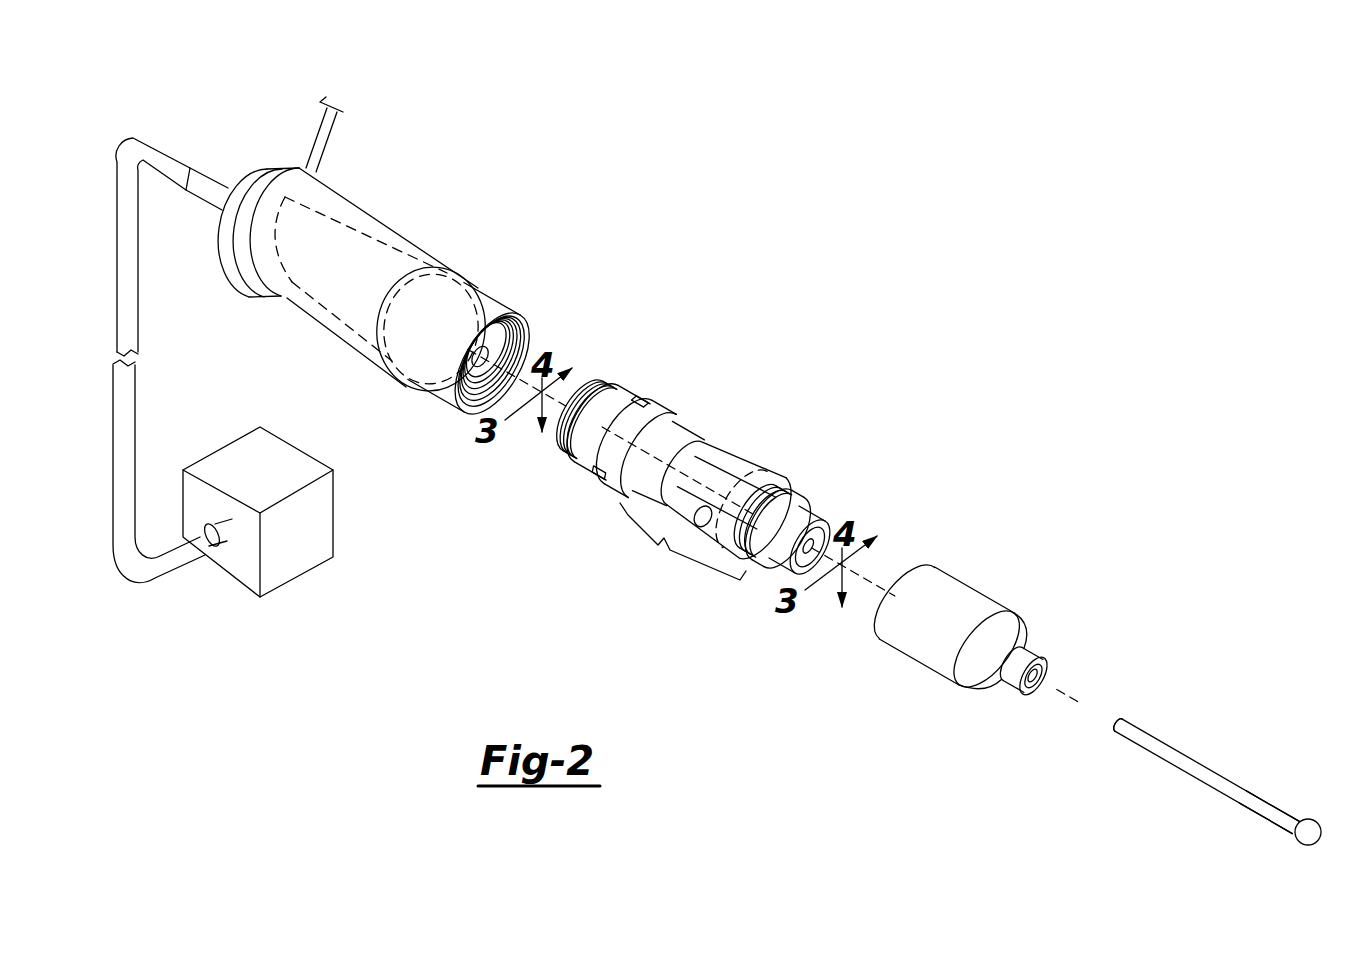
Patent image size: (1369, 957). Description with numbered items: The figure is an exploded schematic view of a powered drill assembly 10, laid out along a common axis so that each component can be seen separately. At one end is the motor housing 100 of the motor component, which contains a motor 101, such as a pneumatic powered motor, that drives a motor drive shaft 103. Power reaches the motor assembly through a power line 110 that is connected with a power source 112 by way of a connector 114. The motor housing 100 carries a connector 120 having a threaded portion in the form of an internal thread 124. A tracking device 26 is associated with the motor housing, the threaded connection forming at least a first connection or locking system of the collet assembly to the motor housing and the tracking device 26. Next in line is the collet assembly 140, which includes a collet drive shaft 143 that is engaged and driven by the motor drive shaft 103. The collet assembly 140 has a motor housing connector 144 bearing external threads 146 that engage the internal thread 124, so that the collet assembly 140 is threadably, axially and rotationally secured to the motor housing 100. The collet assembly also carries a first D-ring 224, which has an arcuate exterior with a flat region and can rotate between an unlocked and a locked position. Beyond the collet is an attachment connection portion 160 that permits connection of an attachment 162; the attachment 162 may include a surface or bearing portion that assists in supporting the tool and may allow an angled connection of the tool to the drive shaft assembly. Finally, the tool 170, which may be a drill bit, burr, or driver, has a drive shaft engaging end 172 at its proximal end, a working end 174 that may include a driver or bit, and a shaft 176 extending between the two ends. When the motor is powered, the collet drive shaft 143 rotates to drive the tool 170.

The powered drill assembly 10 is at (907, 318).
The tracking device 26 is at (286, 146).
The motor housing 100 is at (366, 196).
The motor 101 is at (387, 263).
The motor drive shaft 103 is at (490, 352).
The power line 110 is at (128, 318).
The power source 112 is at (234, 472).
The connector 114 is at (218, 543).
The connector 120 is at (490, 290).
The internal thread 124 is at (447, 387).
The collet assembly 140 is at (717, 432).
The collet drive shaft 143 is at (754, 455).
The motor housing connector 144 is at (633, 380).
The external threads 146 is at (597, 382).
The attachment connection portion 160 is at (683, 544).
The attachment 162 is at (946, 566).
The tool 170 is at (1185, 744).
The drive shaft engaging end 172 is at (1122, 718).
The working end 174 is at (1310, 812).
The shaft 176 is at (1257, 812).
The first D-ring 224 is at (690, 436).